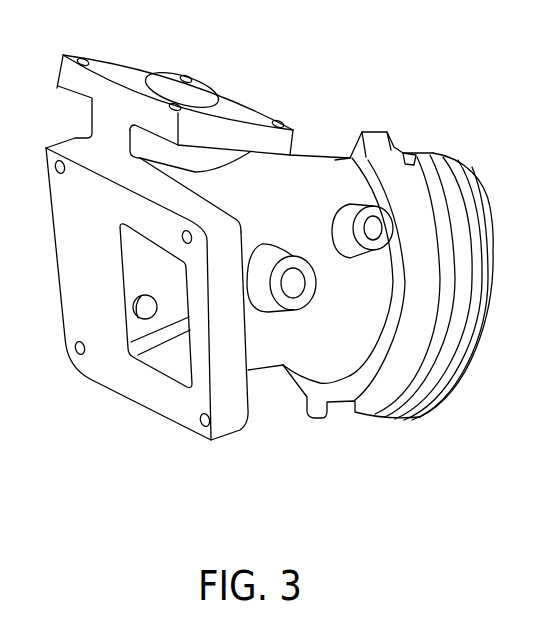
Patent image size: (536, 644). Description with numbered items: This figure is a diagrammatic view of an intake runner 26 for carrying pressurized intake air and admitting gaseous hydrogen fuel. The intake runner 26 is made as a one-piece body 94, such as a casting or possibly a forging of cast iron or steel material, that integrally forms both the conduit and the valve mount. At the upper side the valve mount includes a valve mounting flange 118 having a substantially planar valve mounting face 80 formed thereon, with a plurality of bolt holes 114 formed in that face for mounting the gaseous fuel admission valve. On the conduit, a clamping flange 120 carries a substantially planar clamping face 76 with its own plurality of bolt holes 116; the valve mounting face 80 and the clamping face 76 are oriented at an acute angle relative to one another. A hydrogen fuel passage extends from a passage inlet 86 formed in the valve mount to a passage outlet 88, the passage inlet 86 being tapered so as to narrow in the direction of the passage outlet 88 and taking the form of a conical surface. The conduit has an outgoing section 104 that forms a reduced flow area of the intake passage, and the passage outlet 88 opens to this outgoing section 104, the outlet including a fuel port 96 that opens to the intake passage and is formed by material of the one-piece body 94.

The intake runner 26 is at (356, 427).
The clamping face 76 is at (110, 380).
The valve mounting face 80 is at (244, 100).
The passage inlet 86 is at (203, 98).
The passage outlet 88 is at (146, 294).
The one-piece body 94 is at (325, 155).
The fuel port 96 is at (134, 303).
The outgoing section 104 is at (144, 335).
The bolt holes 114 is at (83, 58).
The bolt holes 116 is at (279, 120).
The valve mounting flange 118 is at (59, 82).
The clamping flange 120 is at (242, 428).